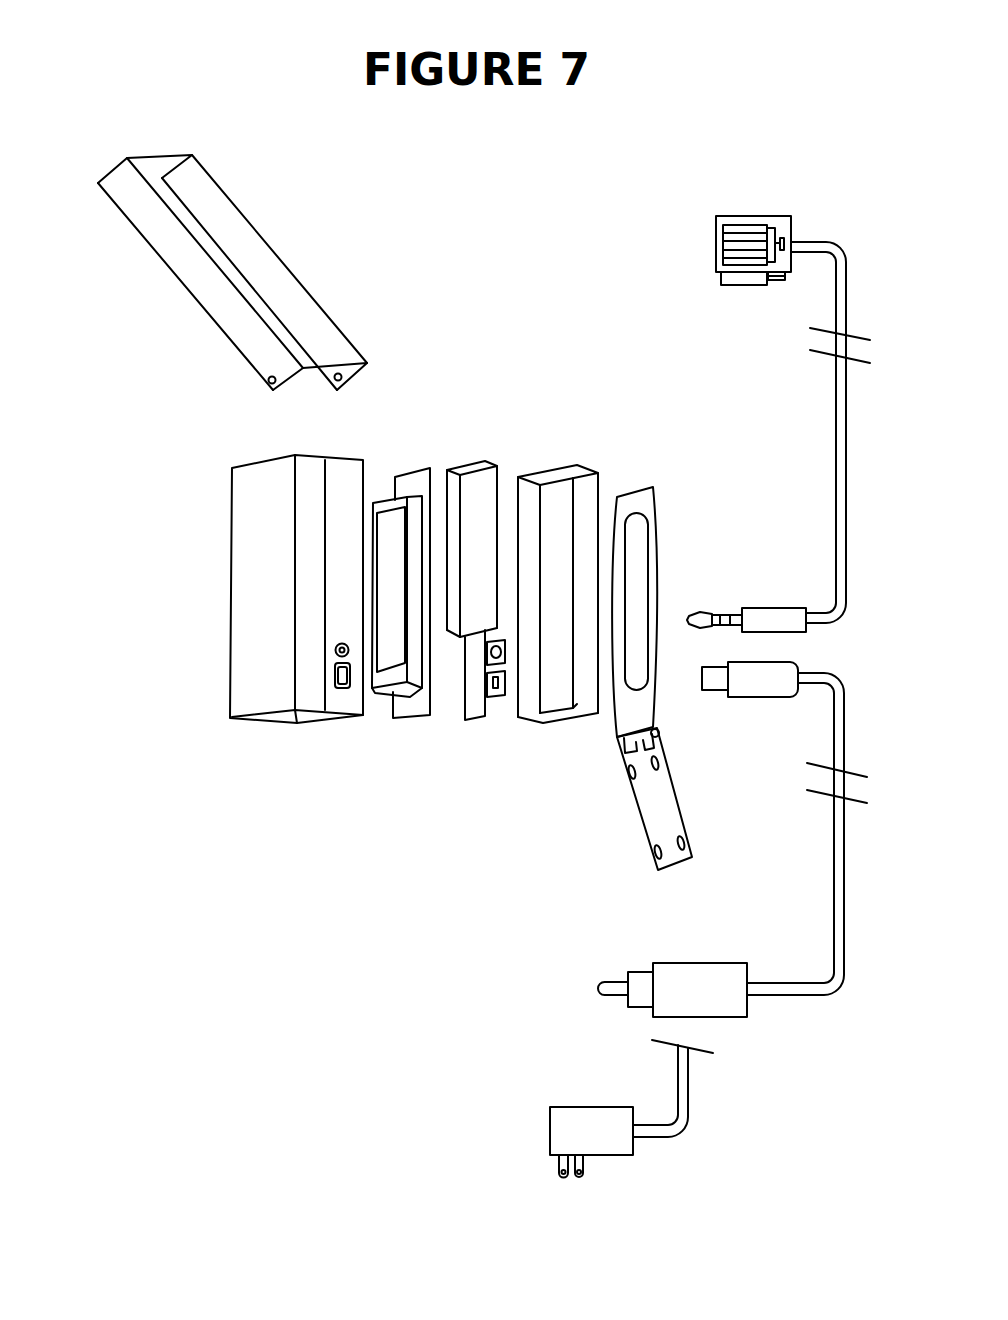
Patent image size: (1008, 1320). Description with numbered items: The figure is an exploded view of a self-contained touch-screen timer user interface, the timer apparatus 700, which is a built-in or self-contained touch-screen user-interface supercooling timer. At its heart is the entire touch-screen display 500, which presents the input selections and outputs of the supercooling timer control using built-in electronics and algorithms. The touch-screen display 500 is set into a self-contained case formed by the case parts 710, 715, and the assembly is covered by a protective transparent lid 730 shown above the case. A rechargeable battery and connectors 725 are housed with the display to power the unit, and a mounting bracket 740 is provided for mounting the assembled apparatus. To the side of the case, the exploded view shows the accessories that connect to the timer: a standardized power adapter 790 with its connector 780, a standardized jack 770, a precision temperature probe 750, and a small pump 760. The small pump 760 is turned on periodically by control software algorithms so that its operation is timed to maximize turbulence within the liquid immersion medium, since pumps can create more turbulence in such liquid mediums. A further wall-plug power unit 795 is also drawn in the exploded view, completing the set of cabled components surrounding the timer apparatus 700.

The timer apparatus 700 is at (171, 134).
The protective transparent lid 730 is at (203, 286).
The case 710 is at (243, 586).
The touch-screen display 500 is at (412, 485).
The rechargeable battery and connectors 725 is at (472, 485).
The case 715 is at (560, 493).
The mounting bracket 740 is at (633, 503).
The small pump 760 is at (730, 247).
The precision temperature probe 750 is at (743, 283).
The standardized jack 770 is at (770, 613).
The connector 780 is at (837, 740).
The standardized power adapter 790 is at (649, 958).
The power adapter 795 is at (584, 1109).